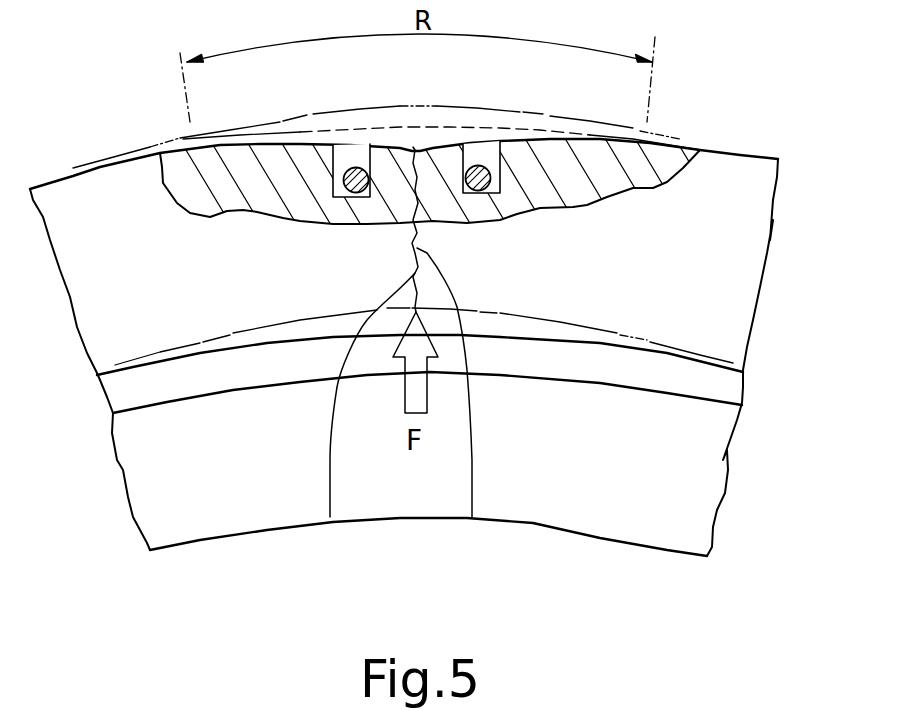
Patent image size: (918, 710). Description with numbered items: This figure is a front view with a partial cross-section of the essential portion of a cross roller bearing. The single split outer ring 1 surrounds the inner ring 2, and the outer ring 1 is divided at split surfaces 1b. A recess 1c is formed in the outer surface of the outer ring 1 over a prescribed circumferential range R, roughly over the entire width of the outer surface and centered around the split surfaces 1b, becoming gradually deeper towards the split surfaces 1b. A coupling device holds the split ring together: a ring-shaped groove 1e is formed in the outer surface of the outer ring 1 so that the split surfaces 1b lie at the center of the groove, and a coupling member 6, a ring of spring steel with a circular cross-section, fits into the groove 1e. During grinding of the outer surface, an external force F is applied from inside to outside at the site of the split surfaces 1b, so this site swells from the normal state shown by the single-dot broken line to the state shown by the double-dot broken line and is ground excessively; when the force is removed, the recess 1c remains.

The outer ring 1 is at (735, 151).
The split surfaces 1b is at (330, 517).
The recess 1c is at (413, 147).
The ring-shaped groove 1e is at (485, 160).
The inner ring 2 is at (605, 540).
The coupling member 6 is at (468, 165).